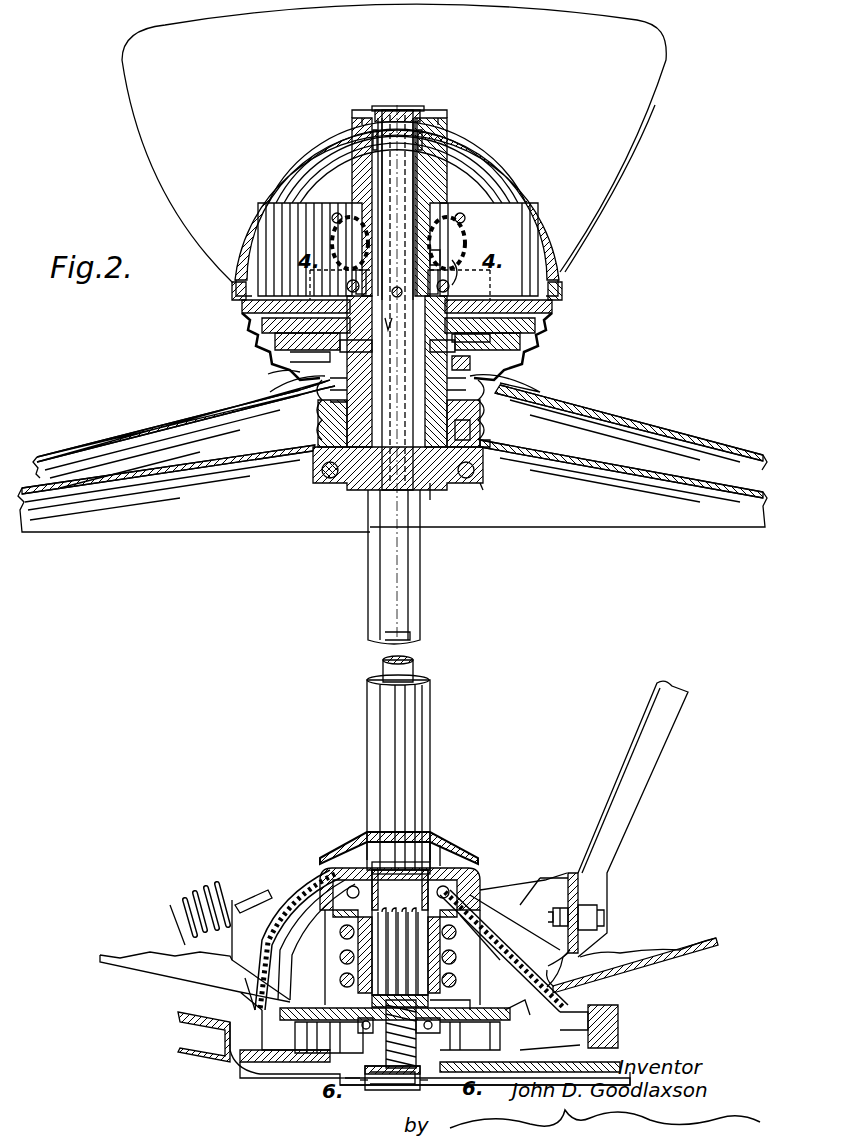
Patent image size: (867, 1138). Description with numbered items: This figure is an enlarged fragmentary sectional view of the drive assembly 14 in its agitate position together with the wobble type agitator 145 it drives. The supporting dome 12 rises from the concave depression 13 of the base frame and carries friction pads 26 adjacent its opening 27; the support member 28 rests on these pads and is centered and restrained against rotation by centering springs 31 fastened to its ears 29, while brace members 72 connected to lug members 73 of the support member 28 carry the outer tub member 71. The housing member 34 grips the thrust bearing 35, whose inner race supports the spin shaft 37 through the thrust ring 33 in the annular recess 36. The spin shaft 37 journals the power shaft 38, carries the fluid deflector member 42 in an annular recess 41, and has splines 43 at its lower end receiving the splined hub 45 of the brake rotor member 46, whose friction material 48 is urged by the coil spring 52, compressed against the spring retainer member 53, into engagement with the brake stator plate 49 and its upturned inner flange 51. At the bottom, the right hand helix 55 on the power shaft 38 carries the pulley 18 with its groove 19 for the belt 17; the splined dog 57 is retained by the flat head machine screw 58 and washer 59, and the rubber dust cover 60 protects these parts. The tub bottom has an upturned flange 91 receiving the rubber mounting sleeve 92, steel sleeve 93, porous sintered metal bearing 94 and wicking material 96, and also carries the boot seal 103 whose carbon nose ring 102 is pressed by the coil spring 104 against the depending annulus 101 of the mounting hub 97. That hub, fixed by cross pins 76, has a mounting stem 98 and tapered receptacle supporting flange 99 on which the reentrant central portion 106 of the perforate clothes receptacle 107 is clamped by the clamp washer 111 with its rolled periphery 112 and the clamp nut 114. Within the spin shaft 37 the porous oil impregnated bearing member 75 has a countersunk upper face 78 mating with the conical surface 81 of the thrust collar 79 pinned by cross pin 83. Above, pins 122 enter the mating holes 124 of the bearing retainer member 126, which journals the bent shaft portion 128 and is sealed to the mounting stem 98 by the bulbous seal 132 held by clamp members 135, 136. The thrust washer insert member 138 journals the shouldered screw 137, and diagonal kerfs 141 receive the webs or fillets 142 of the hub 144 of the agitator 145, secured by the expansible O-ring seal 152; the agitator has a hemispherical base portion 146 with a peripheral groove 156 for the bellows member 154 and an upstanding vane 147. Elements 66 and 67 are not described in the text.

The agitator 145 is at (640, 98).
The upstanding vane 147 is at (620, 185).
The hemispherical base portion 146 is at (478, 130).
The hub 144 is at (430, 160).
The bent shaft portion 128 is at (432, 172).
The shouldered screw 137 is at (400, 110).
The thrust washer insert member 138 is at (420, 112).
The diagonal kerfs 141 is at (360, 115).
The webs or fillets 142 is at (352, 118).
The expansible O-ring seal 152 is at (425, 182).
The bearing retainer member 126 is at (432, 202).
The porous oil impregnated bearing member 75 is at (375, 370).
The clamp member 135 is at (340, 222).
The mating holes 124 is at (452, 224).
The pins 122 is at (455, 235).
The bulbous seal 132 is at (466, 242).
The clamp member 136 is at (440, 275).
The conical surface 81 is at (408, 285).
The thrust collar 79 is at (372, 304).
The cross pin 83 is at (395, 322).
The mounting stem 98 is at (296, 306).
The mounting hub 97 is at (460, 310).
The peripheral groove 156 is at (562, 290).
The clamp nut 114 is at (296, 346).
The bellows member 154 is at (540, 335).
The clamp washer 111 is at (470, 332).
The countersunk upper face 78 is at (397, 343).
The cross pins 76 is at (478, 352).
The rolled periphery 112 is at (290, 368).
The steel sleeve 93 is at (484, 462).
The boot seal 103 is at (320, 420).
The coil spring 104 is at (480, 420).
The depending annulus 101 is at (320, 396).
The carbon nose ring 102 is at (472, 400).
The upturned flange 91 is at (482, 432).
The rubber mounting sleeve 92 is at (492, 443).
The porous sintered metal bearing 94 is at (436, 490).
The wicking material 96 is at (478, 486).
The tapered receptacle supporting flange 99 is at (512, 380).
The reentrant central portion 106 is at (295, 390).
The perforate clothes receptacle 107 is at (645, 416).
The outer tub member 71 is at (590, 530).
The power shaft 38 is at (414, 668).
The spin shaft 37 is at (432, 782).
The fluid deflector member 42 is at (345, 846).
The annular recess 41 is at (370, 830).
The thrust ring 33 is at (440, 845).
The annular recess 36 is at (401, 861).
The thrust bearing 35 is at (482, 866).
The splines 43 is at (400, 938).
The housing member 34 is at (455, 990).
The spring retainer member 53 is at (406, 933).
The coil spring 52 is at (457, 952).
The splined hub 45 is at (300, 975).
The brake rotor member 46 is at (320, 1008).
The opening 27 is at (504, 951).
The supporting dome 12 is at (500, 950).
The drive assembly 14 is at (492, 905).
The friction material 48 is at (520, 1008).
The flange 67 is at (442, 1008).
The bearing 66 is at (334, 1035).
The right hand helix 55 is at (430, 1042).
The upturned inner flange 51 is at (490, 1040).
The pulley 18 is at (228, 1058).
The groove 19 is at (180, 1032).
The belt 17 is at (622, 1012).
The brake stator plate 49 is at (520, 1052).
The flat head machine screw 58 is at (395, 1088).
The splined dog 57 is at (370, 1088).
The washer 59 is at (422, 1088).
The rubber dust cover 60 is at (362, 1080).
The lug members 73 is at (568, 873).
The brace members 72 is at (666, 750).
The support member 28 is at (553, 908).
The concave depression 13 is at (636, 952).
The friction pads 26 is at (566, 967).
The centering springs 31 is at (198, 890).
The ears 29 is at (248, 895).